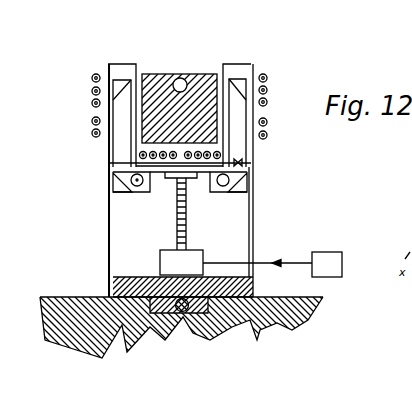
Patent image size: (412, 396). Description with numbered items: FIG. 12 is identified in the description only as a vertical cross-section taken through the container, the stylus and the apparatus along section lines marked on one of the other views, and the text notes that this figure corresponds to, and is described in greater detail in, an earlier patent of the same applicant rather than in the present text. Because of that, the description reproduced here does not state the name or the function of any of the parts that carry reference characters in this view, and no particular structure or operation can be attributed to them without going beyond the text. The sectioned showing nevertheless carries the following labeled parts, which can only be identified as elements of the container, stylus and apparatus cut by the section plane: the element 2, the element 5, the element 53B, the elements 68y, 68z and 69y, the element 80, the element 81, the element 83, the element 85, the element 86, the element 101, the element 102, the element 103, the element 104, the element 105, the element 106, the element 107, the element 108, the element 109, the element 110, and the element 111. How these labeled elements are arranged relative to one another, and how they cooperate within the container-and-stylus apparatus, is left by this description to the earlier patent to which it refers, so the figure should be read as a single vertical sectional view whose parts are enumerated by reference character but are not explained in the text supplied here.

The magnetic block 2 is at (156, 74).
The bore 5 is at (183, 79).
The control unit 53B is at (272, 257).
The coil conductors 68y is at (270, 92).
The coil conductors 68z is at (135, 153).
The coil conductors 69y is at (91, 87).
The pivot 80 is at (176, 303).
The carriage plate 81 is at (132, 280).
The motor 83 is at (224, 188).
The clamp 85 is at (118, 167).
The roller 86 is at (138, 186).
The base 101 is at (310, 308).
The teeth 102 is at (258, 328).
The frame 103 is at (108, 228).
The left guide column 104 is at (117, 85).
The left bracket 105 is at (115, 186).
The right wedge 106 is at (238, 184).
The right guide column 107 is at (241, 86).
The servo 108 is at (200, 259).
The threaded rod 109 is at (186, 232).
The crossbar 110 is at (180, 182).
The right bracket 111 is at (228, 194).